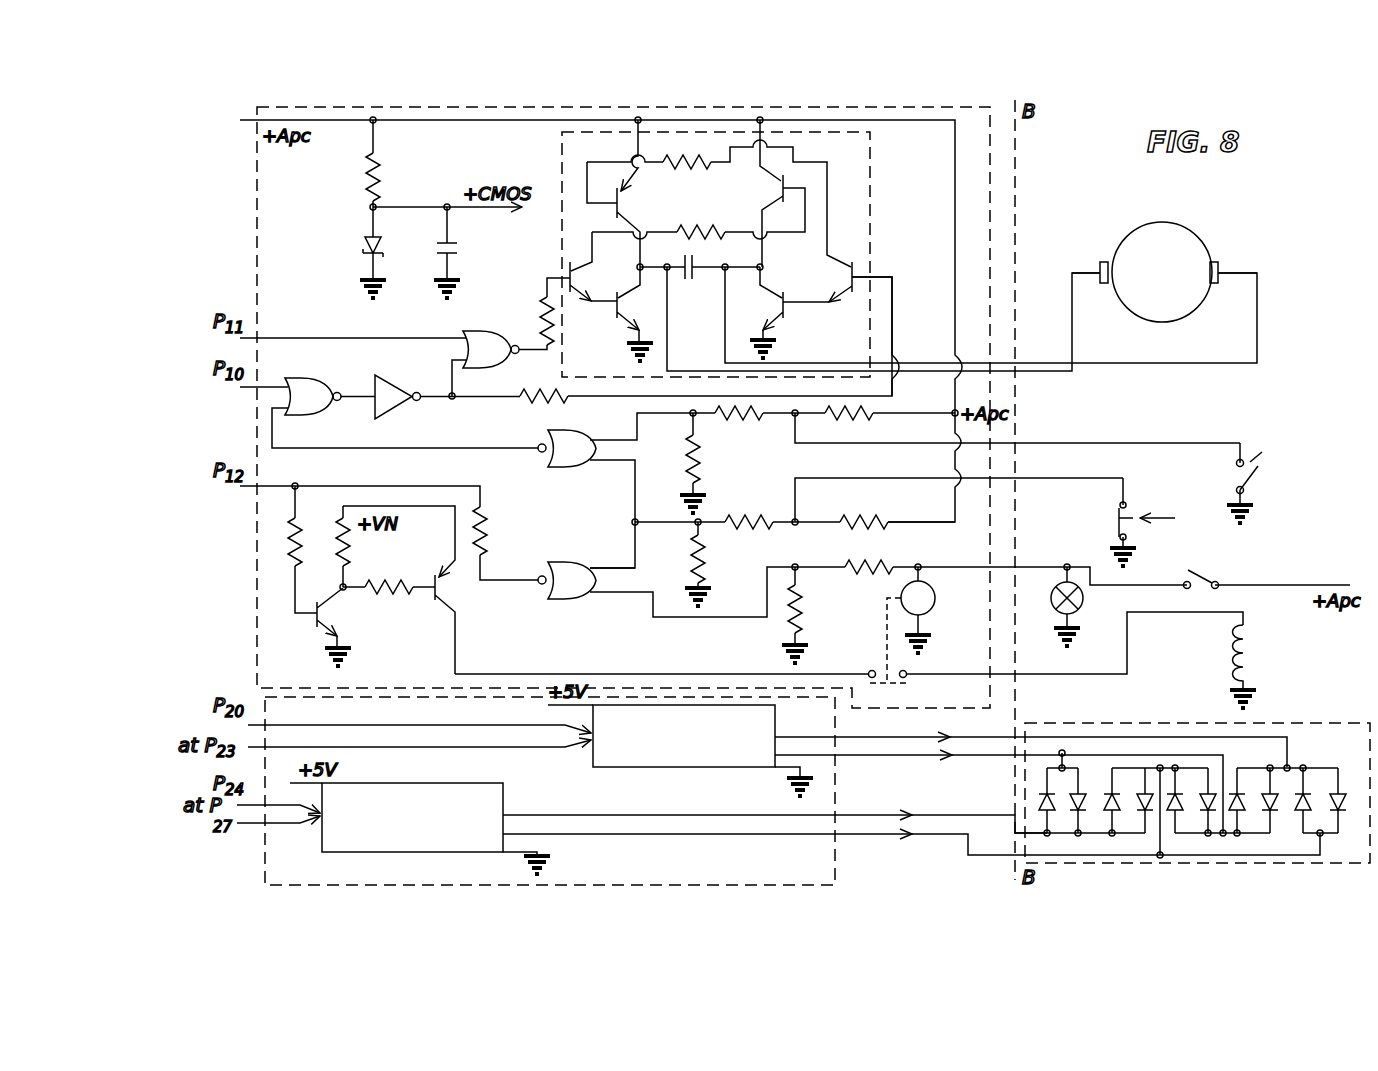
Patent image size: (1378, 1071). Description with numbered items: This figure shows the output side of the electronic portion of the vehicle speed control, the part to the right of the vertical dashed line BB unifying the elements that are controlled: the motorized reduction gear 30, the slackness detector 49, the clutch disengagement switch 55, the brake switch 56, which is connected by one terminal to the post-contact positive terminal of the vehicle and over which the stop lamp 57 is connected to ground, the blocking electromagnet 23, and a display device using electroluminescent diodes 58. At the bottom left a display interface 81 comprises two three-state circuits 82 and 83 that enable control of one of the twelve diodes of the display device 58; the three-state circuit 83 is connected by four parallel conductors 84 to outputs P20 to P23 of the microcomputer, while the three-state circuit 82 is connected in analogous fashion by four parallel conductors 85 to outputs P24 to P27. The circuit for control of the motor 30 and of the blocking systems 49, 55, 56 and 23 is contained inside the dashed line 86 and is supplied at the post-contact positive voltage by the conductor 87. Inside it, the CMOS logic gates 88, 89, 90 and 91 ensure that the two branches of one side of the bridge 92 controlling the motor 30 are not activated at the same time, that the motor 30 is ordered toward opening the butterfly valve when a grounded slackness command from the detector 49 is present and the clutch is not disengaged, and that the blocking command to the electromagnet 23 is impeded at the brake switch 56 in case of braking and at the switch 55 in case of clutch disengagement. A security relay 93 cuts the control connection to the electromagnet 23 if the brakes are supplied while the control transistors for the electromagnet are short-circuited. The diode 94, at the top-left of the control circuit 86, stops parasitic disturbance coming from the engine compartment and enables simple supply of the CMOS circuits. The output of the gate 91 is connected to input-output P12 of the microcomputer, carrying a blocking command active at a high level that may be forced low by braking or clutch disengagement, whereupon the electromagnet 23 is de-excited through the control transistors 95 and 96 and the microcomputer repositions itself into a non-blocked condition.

The blocking electromagnet 23 is at (1255, 665).
The motorized reduction gear 30 is at (1187, 243).
The slackness detector 49 is at (1255, 483).
The clutch disengagement switch 55 is at (1116, 516).
The brake switch 56 is at (1214, 584).
The stop lamp 57 is at (1081, 608).
The display device using electroluminescent diodes 58 is at (1192, 793).
The display interface 81 is at (820, 870).
The three-state circuit 82 is at (805, 828).
The three-state circuit 83 is at (917, 769).
The parallel conductors 84 is at (468, 712).
The parallel conductors 85 is at (285, 828).
The control circuit 86 is at (975, 187).
The conductor 87 is at (490, 120).
The CMOS logic gate 88 is at (315, 385).
The CMOS logic gate 89 is at (490, 340).
The CMOS logic gate 90 is at (568, 466).
The CMOS logic gate 91 is at (568, 598).
The bridge 92 is at (862, 170).
The security relay 93 is at (934, 595).
The diode 94 is at (362, 249).
The control transistor 95 is at (318, 628).
The control transistor 96 is at (435, 602).